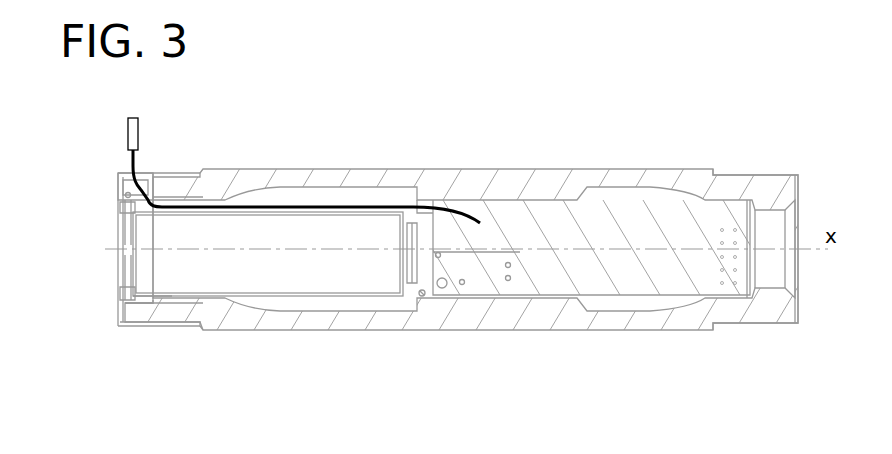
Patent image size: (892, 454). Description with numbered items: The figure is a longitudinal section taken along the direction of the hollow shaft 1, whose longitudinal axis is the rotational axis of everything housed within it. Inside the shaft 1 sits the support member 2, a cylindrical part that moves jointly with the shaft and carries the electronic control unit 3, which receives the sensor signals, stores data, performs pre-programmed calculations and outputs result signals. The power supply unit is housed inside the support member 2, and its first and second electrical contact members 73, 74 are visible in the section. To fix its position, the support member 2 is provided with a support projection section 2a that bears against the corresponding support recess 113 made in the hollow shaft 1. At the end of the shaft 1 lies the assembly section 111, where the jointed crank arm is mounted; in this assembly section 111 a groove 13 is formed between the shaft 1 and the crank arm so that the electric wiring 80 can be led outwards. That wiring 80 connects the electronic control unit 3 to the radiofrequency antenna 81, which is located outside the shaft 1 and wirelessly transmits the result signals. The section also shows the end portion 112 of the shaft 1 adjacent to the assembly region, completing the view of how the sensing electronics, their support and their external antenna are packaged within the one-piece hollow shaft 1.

The hollow shaft 1 is at (502, 183).
The support member 2 is at (330, 297).
The support projection section 2a is at (157, 305).
The electronic control unit 3 is at (563, 275).
The groove 13 is at (127, 187).
The first electrical contact member 73 is at (123, 297).
The second electrical contact member 74 is at (128, 218).
The electric wiring 80 is at (435, 203).
The radiofrequency antenna 81 is at (140, 143).
The assembly section 111 is at (170, 327).
The housing end portion 112 is at (755, 322).
The support recess 113 is at (155, 307).